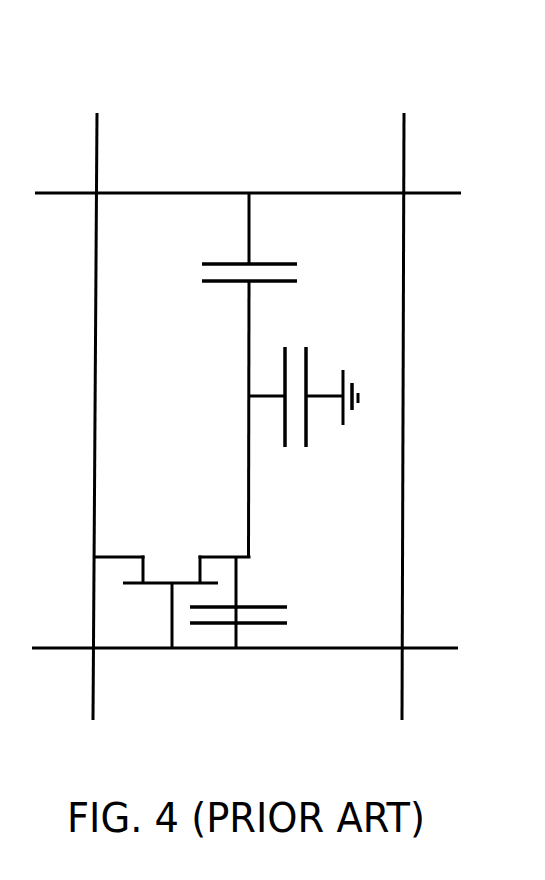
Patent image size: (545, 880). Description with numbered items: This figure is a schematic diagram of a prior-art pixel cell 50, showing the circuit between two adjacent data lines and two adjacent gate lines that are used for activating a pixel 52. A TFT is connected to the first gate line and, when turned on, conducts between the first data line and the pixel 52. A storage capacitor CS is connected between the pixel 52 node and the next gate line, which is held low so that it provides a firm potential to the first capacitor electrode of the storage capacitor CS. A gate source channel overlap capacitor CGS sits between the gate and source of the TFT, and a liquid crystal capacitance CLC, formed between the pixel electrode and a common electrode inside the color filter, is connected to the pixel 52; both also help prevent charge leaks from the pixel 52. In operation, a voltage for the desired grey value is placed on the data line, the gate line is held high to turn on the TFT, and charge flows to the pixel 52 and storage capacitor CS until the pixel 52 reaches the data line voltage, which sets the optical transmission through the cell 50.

The pixel cell 50 is at (270, 362).
The pixel 52 is at (248, 396).
The storage capacitor CS is at (232, 279).
The liquid crystal capacitance CLC is at (329, 387).
The gate source channel overlap capacitor CGS is at (262, 599).
The element TFT is at (172, 586).